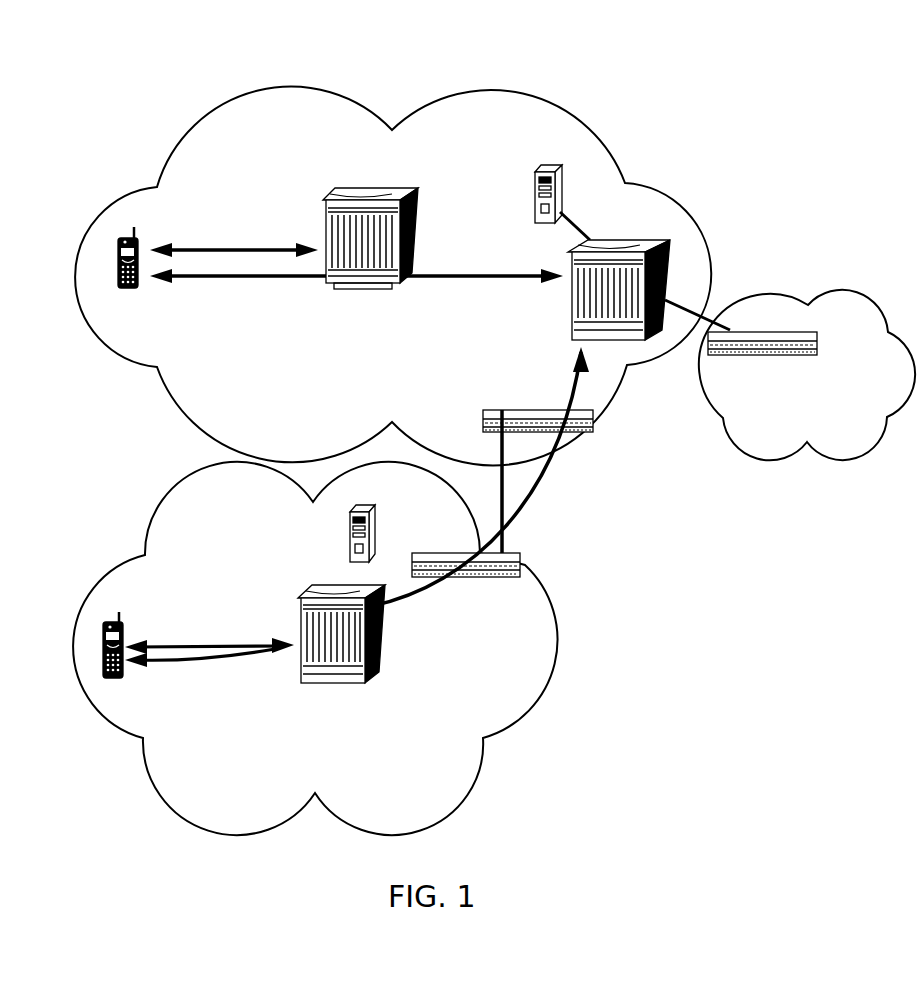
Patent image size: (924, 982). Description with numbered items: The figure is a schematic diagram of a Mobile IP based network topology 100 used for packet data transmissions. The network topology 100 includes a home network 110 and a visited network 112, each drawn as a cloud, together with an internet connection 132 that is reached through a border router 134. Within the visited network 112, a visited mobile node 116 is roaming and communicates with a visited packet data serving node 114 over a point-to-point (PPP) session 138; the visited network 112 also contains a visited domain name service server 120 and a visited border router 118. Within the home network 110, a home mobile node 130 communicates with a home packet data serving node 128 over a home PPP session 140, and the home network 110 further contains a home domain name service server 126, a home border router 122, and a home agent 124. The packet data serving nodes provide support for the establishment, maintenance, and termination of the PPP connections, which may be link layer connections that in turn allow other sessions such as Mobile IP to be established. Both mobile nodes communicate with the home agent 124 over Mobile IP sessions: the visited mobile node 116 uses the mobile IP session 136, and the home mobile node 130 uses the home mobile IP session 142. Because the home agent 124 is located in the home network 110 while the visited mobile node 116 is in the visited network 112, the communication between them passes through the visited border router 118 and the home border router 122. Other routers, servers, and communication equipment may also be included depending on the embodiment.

The network topology 100 is at (831, 69).
The home network 110 is at (168, 163).
The visited network 112 is at (150, 535).
The visited packet data serving node 114 is at (388, 630).
The visited mobile node 116 is at (122, 630).
The visited border router 118 is at (518, 553).
The visited domain name service server 120 is at (350, 550).
The home border router 122 is at (483, 425).
The home agent 124 is at (572, 288).
The home domain name service server 126 is at (538, 172).
The home packet data serving node 128 is at (407, 190).
The home mobile node 130 is at (120, 278).
The internet connection 132 is at (838, 292).
The border router 134 is at (718, 352).
The mobile IP session 136 is at (537, 485).
The point-to-point session 138 is at (167, 645).
The home PPP session 140 is at (195, 245).
The home mobile IP session 142 is at (240, 278).